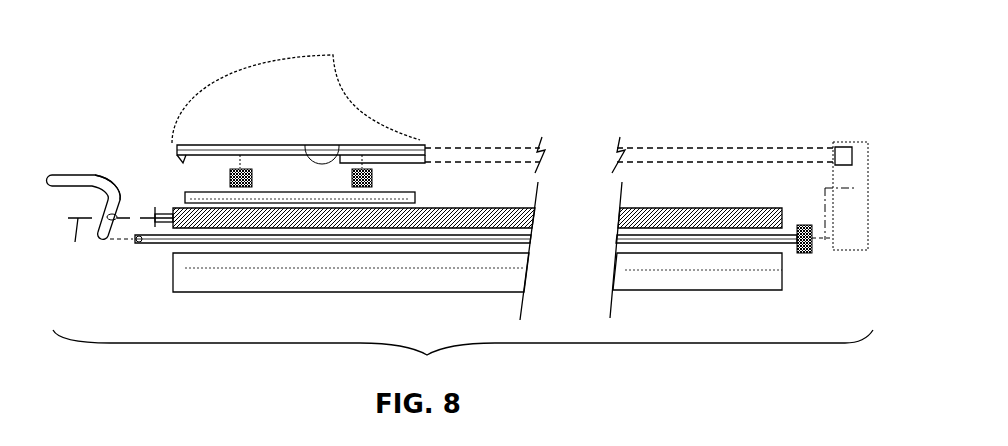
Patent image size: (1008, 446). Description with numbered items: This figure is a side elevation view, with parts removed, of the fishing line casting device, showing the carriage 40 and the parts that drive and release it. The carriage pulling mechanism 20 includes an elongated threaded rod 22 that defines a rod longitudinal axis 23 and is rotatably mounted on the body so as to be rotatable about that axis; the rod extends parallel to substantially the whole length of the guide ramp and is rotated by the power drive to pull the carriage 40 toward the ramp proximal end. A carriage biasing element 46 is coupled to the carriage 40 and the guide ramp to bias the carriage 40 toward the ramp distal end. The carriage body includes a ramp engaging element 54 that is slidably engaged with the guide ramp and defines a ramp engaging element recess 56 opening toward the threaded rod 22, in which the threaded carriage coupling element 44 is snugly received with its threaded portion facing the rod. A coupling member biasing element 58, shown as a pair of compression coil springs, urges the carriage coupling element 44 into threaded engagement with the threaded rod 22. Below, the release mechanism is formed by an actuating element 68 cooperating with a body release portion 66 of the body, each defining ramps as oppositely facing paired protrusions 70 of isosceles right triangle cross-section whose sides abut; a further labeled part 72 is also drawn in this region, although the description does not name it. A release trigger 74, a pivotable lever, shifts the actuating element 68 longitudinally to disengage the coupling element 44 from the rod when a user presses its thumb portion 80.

The carriage pulling mechanism 20 is at (748, 201).
The threaded rod 22 is at (727, 210).
The rod longitudinal axis 23 is at (75, 246).
The carriage 40 is at (344, 89).
The carriage coupling element 44 is at (415, 197).
The carriage biasing element 46 is at (690, 148).
The ramp engaging element 54 is at (197, 150).
The ramp engaging element recess 56 is at (294, 173).
The coupling member biasing element 58 is at (232, 176).
The body release portion 66 is at (317, 285).
The actuating element 68 is at (149, 241).
The paired protrusions 70 is at (175, 247).
The center line 72 is at (657, 240).
The release trigger 74 is at (66, 172).
The thumb portion 80 is at (97, 176).